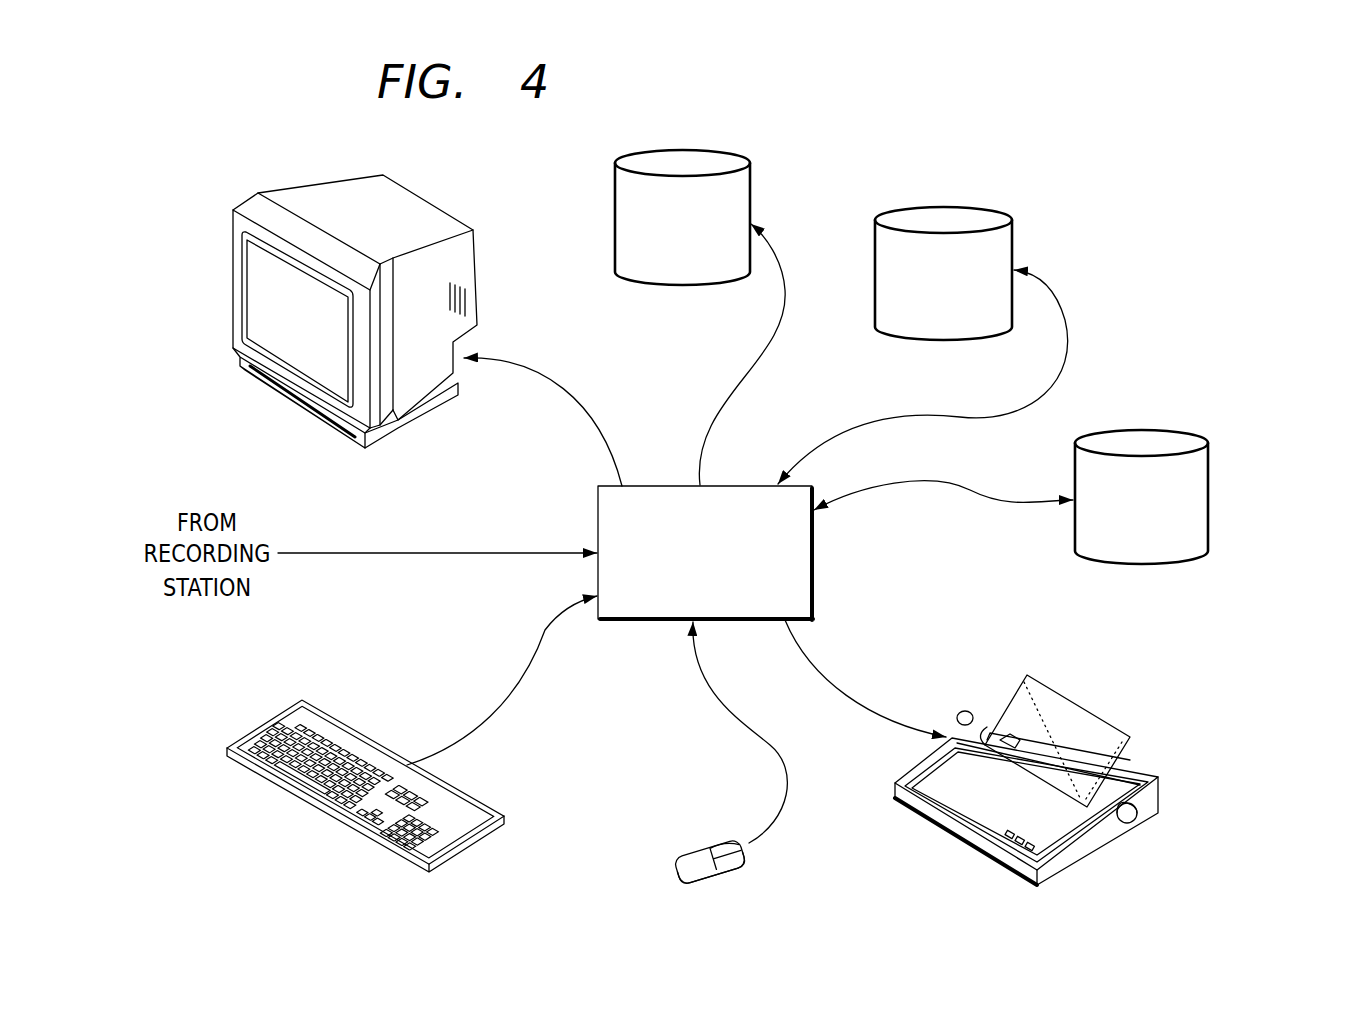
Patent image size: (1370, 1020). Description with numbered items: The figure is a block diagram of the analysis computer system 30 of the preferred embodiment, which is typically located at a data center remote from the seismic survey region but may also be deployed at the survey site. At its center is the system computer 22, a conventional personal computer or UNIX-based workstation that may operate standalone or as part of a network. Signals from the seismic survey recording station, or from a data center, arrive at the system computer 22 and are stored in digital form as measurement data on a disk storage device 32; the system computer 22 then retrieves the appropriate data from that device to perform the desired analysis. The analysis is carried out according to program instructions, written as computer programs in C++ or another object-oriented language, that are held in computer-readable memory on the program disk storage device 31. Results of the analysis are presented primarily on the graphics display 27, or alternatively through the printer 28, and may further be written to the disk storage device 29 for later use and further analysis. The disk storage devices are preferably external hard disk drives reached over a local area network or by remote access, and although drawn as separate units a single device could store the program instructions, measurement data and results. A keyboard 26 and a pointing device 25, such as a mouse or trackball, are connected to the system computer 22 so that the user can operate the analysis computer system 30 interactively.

The system computer 22 is at (812, 573).
The pointing device 25 is at (680, 880).
The keyboard 26 is at (335, 822).
The graphics display 27 is at (338, 192).
The printer 28 is at (1098, 857).
The disk storage device 29 is at (1178, 430).
The analysis computer system 30 is at (1288, 398).
The program disk storage device 31 is at (643, 150).
The data storage 32 is at (970, 207).